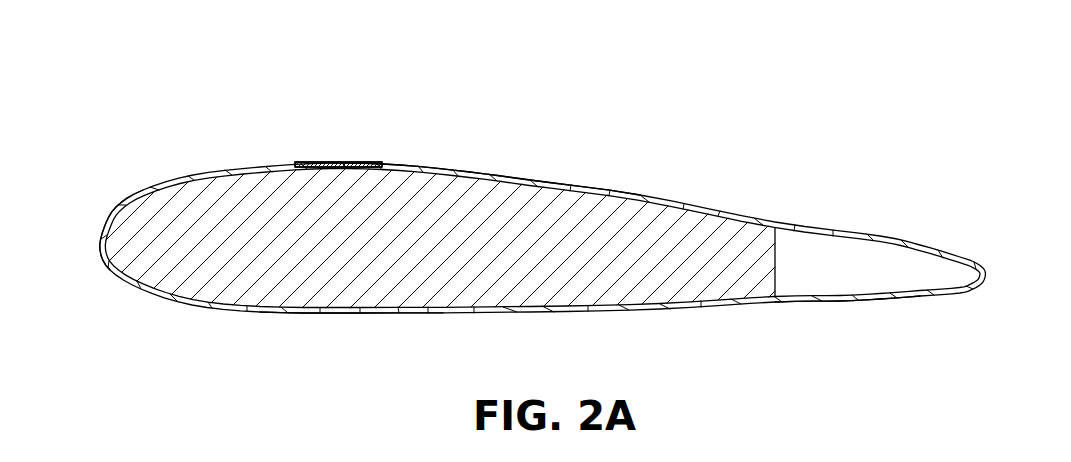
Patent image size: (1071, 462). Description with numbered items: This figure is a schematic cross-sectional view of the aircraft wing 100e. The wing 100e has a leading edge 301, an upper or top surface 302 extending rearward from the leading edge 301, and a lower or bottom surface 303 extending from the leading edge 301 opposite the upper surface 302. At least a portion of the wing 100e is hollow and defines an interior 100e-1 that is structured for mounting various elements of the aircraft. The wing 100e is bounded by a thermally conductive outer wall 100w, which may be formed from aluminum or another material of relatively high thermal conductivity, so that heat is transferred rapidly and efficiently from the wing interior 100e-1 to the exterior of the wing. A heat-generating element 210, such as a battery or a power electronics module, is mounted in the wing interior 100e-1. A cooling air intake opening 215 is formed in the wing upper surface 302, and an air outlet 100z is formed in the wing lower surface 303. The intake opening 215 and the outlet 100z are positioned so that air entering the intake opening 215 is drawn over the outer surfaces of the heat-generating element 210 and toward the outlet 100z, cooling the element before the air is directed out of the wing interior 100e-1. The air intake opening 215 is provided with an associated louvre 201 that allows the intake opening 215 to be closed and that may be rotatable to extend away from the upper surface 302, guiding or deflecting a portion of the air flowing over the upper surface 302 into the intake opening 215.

The wing 100e is at (623, 187).
The wing interior 100e-1 is at (827, 257).
The outer wall 100w is at (542, 180).
The air outlet 100z is at (840, 302).
The heat-generating element 210 is at (263, 205).
The cooling air intake opening 215 is at (338, 162).
The louvre 201 is at (338, 162).
The leading edge 301 is at (100, 247).
The upper surface 302 is at (387, 163).
The lower surface 303 is at (345, 315).